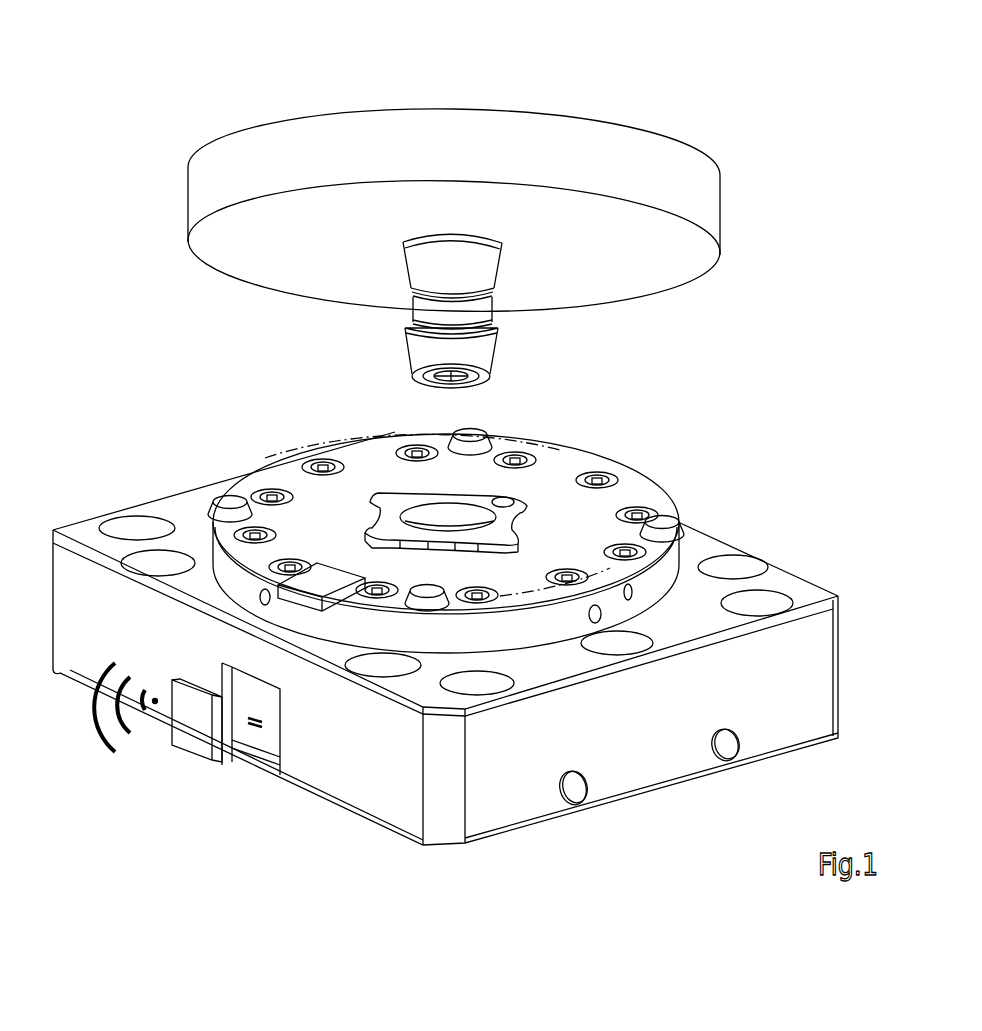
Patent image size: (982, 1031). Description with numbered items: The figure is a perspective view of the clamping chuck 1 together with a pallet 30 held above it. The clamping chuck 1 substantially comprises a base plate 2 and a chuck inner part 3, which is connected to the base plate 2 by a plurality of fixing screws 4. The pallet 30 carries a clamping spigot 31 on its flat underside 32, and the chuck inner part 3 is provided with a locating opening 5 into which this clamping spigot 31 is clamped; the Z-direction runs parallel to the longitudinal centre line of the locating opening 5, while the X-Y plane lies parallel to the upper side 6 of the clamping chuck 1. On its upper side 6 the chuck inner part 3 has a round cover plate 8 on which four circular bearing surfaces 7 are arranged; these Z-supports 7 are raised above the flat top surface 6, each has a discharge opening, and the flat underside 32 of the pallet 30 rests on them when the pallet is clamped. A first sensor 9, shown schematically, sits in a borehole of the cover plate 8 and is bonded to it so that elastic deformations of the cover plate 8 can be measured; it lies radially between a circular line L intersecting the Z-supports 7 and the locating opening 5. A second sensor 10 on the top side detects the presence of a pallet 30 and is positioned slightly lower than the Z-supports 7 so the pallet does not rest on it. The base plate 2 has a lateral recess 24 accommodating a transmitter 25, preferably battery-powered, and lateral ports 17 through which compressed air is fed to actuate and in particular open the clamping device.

The clamping chuck 1 is at (724, 452).
The base plate 2 is at (445, 652).
The chuck inner part 3 is at (450, 528).
The fixing screws 4 is at (639, 512).
The locating opening 5 is at (459, 506).
The upper side 6 is at (362, 465).
The circular bearing surfaces (Z-supports) 7 is at (230, 495).
The round cover plate 8 is at (527, 625).
The first sensor 9 is at (503, 495).
The second sensor 10 is at (333, 567).
The circular line L is at (516, 594).
The lateral ports 17 is at (572, 793).
The recess 24 is at (268, 737).
The transmitter 25 is at (198, 742).
The pallet 30 is at (453, 189).
The clamping spigot 31 is at (416, 346).
The flat underside 32 is at (609, 268).